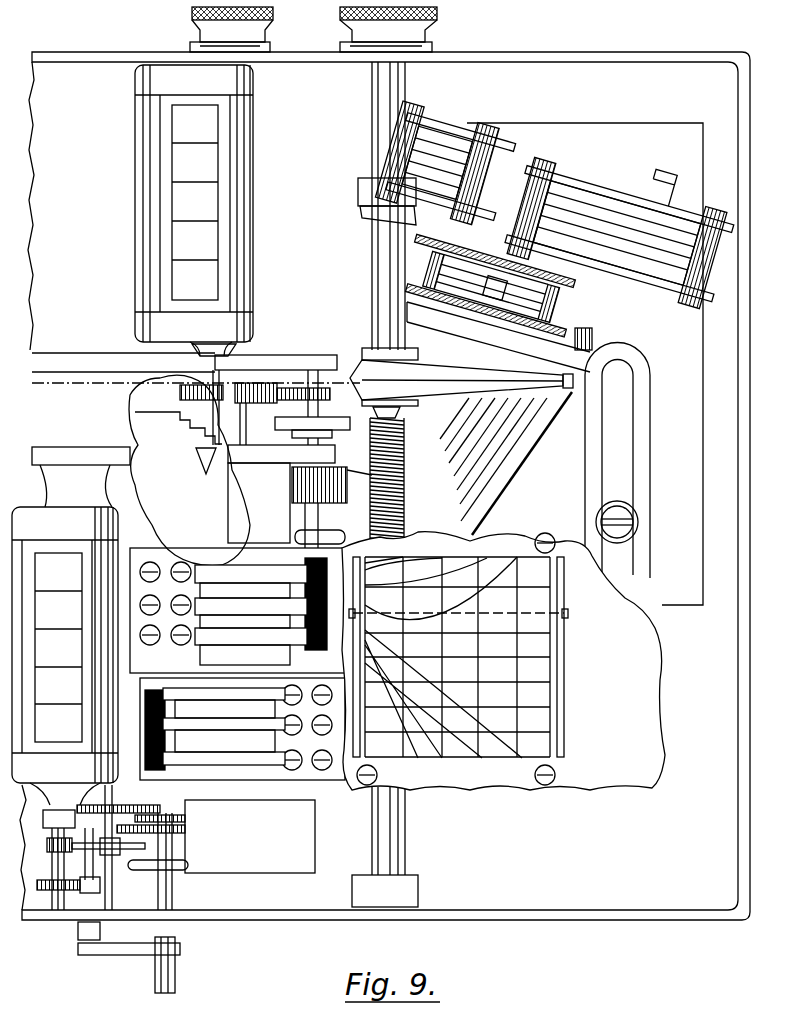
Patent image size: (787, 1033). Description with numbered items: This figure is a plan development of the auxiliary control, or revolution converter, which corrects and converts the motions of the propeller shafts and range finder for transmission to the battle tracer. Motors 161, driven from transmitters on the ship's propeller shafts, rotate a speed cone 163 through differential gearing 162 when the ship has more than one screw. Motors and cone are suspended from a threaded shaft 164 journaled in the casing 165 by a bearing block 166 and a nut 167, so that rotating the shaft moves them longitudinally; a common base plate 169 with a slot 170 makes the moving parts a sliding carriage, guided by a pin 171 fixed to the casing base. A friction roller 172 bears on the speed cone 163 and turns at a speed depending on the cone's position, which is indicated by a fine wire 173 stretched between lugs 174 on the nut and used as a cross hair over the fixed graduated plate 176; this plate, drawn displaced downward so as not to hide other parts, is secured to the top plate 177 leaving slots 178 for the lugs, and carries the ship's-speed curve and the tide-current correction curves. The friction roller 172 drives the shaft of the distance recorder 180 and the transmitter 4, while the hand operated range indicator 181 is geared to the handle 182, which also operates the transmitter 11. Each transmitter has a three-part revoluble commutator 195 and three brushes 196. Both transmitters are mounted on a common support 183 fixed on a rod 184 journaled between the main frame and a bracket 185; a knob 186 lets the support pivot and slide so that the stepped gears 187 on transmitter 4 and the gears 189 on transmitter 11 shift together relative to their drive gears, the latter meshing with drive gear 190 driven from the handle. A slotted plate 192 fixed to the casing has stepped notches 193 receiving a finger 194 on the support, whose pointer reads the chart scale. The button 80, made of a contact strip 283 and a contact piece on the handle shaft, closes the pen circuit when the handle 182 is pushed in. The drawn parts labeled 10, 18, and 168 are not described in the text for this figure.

The transmitter 4 is at (298, 650).
The axis line 10 is at (189, 384).
The transmitter 11 is at (145, 772).
The shaft 18 is at (345, 466).
The button 80 is at (80, 821).
The motors 161 is at (558, 206).
The differential gearing 162 is at (535, 303).
The speed cone 163 is at (498, 337).
The threaded shaft 164 is at (372, 262).
The casing 165 is at (677, 908).
The bearing block 166 is at (362, 205).
The nut 167 is at (440, 402).
The knob 168 is at (440, 14).
The base plate 169 is at (585, 364).
The slot 170 is at (626, 421).
The pin 171 is at (601, 516).
The friction roller 172 is at (325, 428).
The fine wire 173 is at (462, 398).
The lugs 174 is at (362, 352).
The graduated plate 176 is at (495, 758).
The top plate 177 is at (640, 735).
The slots 178 is at (550, 665).
The distance recorder 180 is at (140, 190).
The range indicator 181 is at (57, 512).
The handle 182 is at (176, 965).
The support 183 is at (103, 450).
The rod 184 is at (242, 352).
The bracket 185 is at (128, 355).
The knob 186 is at (191, 13).
The stepped gears 187 is at (332, 496).
The gears 189 is at (182, 803).
The drive gear 190 is at (130, 806).
The slotted plate 192 is at (246, 498).
The stepped notches 193 is at (189, 470).
The finger 194 is at (186, 476).
The revoluble commutator 195 is at (330, 570).
The brushes 196 is at (250, 567).
The contact strip 283 is at (78, 812).